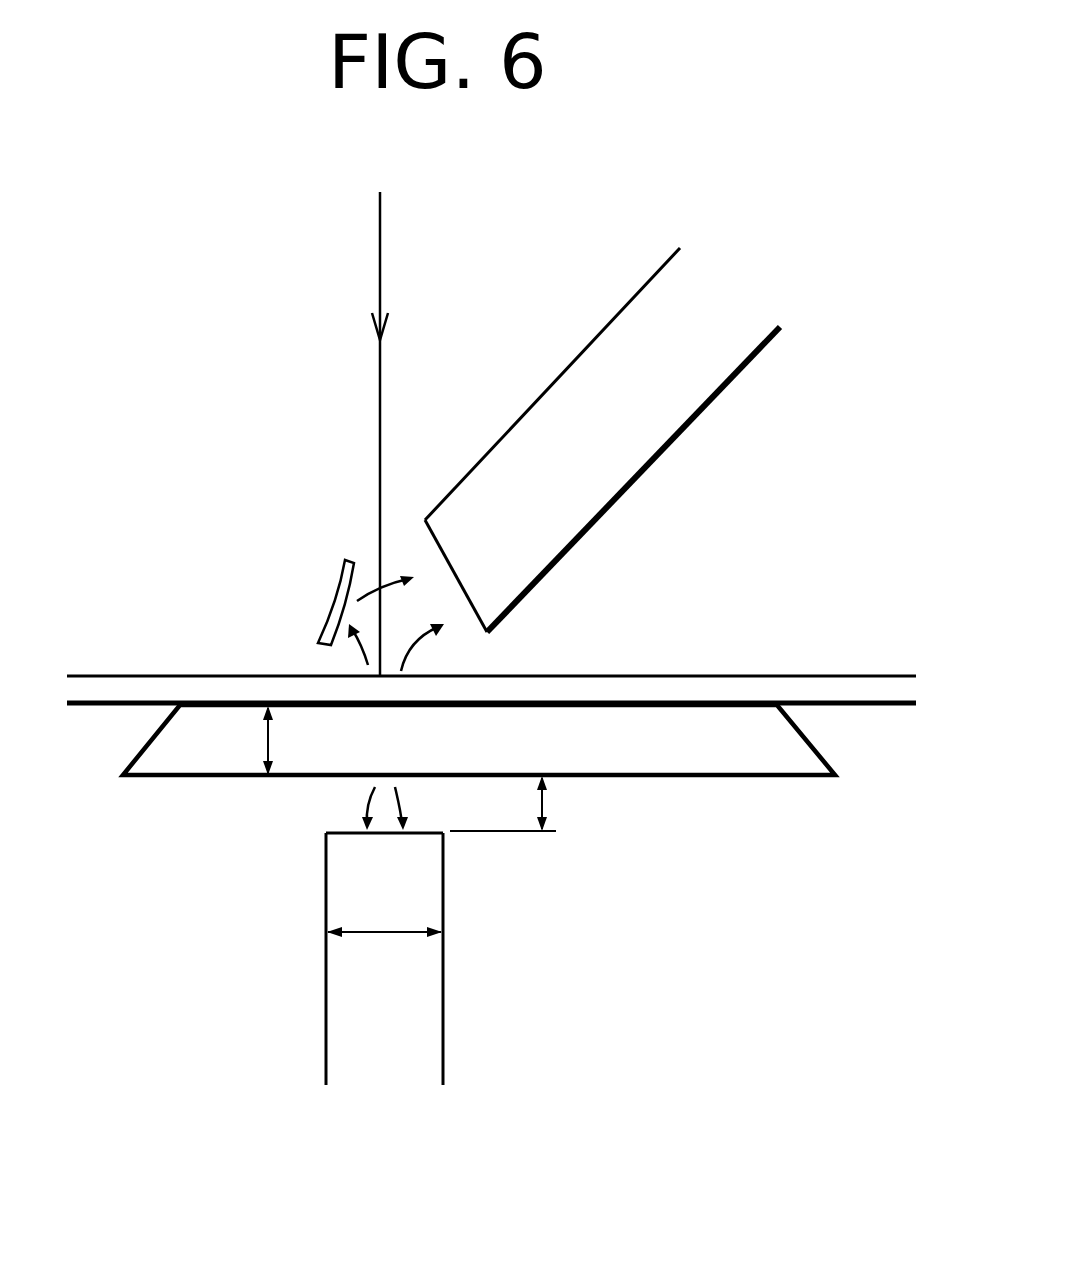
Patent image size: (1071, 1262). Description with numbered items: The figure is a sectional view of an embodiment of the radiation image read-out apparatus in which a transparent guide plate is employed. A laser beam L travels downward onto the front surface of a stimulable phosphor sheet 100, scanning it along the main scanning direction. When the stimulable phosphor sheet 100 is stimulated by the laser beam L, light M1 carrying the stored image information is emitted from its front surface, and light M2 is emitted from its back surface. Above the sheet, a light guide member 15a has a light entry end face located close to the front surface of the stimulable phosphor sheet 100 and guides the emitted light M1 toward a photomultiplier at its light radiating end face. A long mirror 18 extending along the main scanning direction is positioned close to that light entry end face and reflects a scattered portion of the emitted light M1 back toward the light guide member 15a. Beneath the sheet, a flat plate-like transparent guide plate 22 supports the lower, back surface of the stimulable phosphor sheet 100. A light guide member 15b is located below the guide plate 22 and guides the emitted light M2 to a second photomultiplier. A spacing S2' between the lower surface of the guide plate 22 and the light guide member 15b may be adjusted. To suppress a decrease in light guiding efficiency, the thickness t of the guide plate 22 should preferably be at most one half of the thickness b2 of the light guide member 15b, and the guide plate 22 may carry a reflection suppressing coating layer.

The laser beam L is at (381, 247).
The light guide member 15a is at (580, 366).
The light guide member 15b is at (423, 1041).
The mirror 18 is at (323, 598).
The stimulable phosphor sheet 100 is at (198, 676).
The transparent guide plate 22 is at (158, 777).
The emitted light M1 is at (424, 636).
The emitted light M2 is at (400, 797).
The thickness of the guide plate t is at (270, 746).
The spacing S2' is at (555, 803).
The thickness of the light guide member b2 is at (368, 934).